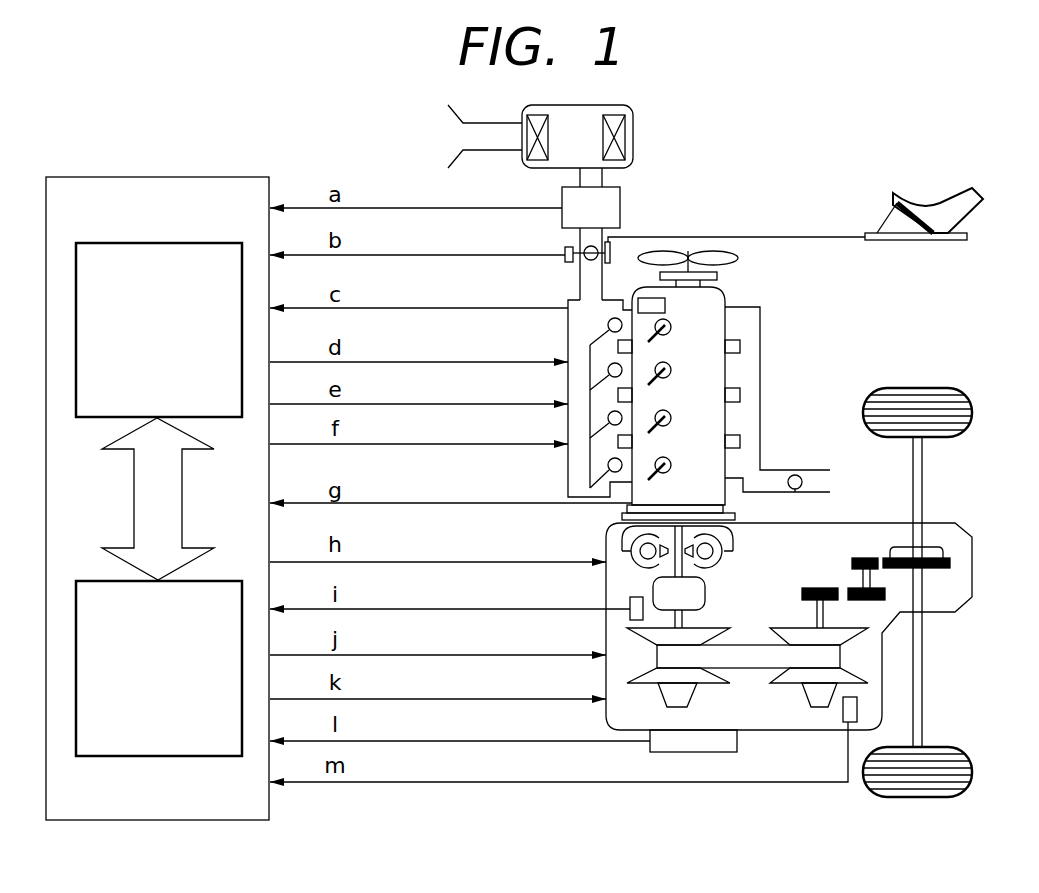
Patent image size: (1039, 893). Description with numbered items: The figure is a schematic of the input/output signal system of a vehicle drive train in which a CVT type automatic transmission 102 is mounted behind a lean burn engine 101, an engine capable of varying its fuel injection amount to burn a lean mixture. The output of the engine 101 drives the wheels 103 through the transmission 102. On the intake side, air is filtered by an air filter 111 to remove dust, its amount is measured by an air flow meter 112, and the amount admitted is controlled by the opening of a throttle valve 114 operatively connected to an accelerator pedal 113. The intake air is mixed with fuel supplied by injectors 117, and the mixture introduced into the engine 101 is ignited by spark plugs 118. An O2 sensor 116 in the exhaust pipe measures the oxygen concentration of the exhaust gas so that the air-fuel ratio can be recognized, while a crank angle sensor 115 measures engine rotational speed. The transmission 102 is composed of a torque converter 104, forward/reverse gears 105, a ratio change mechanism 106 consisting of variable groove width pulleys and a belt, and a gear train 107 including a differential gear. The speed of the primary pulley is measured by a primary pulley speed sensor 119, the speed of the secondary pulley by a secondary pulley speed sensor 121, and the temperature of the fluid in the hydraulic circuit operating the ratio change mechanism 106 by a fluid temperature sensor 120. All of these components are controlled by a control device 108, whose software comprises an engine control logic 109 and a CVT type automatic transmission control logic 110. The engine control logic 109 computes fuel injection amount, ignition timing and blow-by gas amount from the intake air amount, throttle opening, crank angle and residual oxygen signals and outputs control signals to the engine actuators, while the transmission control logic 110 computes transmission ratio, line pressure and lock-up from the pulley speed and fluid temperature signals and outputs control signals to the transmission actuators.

The lean burn engine 101 is at (720, 375).
The CVT type automatic transmission 102 is at (972, 546).
The wheels 103 is at (935, 390).
The torque converter 104 is at (733, 540).
The forward/reverse gears 105 is at (705, 592).
The ratio change mechanism 106 is at (855, 797).
The gear train 107 is at (970, 518).
The control device 108 is at (232, 177).
The engine control logic 109 is at (200, 243).
The CVT type automatic transmission control logic 110 is at (205, 581).
The air filter 111 is at (633, 118).
The air flow meter 112 is at (620, 200).
The accelerator pedal 113 is at (912, 241).
The throttle valve 114 is at (589, 259).
The crank angle sensor 115 is at (665, 305).
The O2 sensor 116 is at (795, 475).
The injectors 117 is at (608, 326).
The spark plugs 118 is at (671, 325).
The primary pulley speed sensor 119 is at (628, 614).
The fluid temperature sensor 120 is at (650, 745).
The secondary pulley speed sensor 121 is at (857, 708).